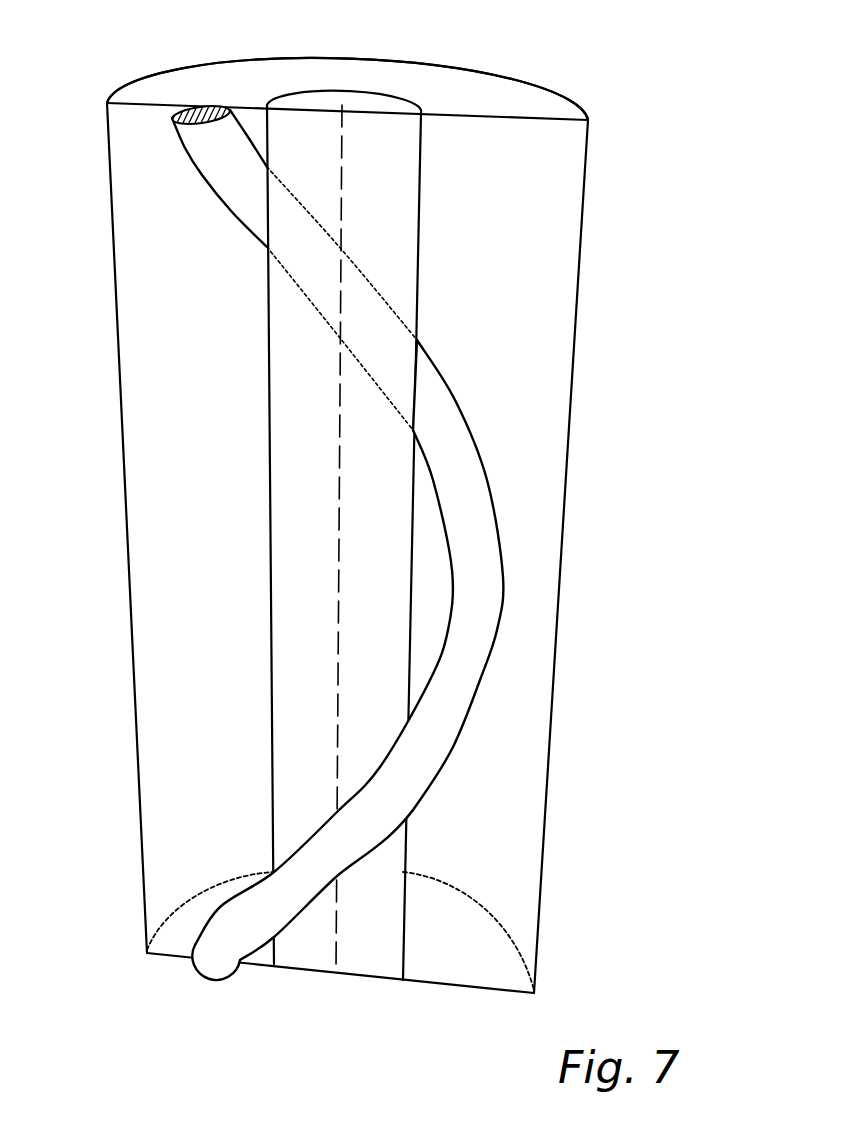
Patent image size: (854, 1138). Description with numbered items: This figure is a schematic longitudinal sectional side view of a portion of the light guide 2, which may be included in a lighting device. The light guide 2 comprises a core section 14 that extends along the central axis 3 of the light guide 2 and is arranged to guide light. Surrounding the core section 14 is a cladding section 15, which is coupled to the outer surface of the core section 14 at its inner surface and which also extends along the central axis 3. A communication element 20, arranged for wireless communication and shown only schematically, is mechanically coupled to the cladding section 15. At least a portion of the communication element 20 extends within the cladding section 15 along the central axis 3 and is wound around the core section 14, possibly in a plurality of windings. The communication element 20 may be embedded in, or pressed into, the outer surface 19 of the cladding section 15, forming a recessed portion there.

The light guide 2 is at (653, 108).
The central axis 3 is at (342, 182).
The core section 14 is at (290, 523).
The cladding section 15 is at (148, 367).
The outer surface 19 is at (137, 715).
The communication element 20 is at (220, 165).